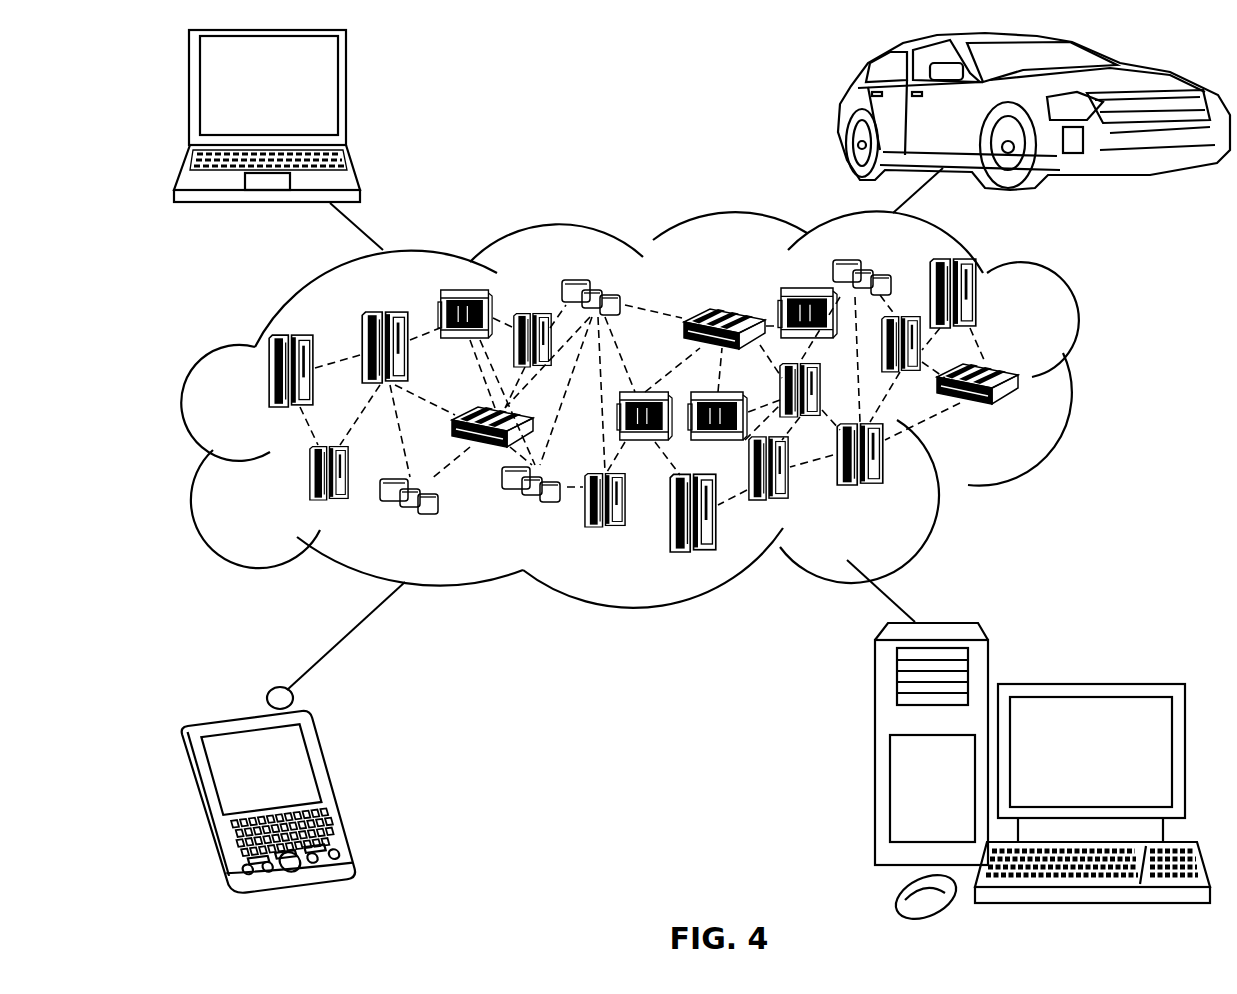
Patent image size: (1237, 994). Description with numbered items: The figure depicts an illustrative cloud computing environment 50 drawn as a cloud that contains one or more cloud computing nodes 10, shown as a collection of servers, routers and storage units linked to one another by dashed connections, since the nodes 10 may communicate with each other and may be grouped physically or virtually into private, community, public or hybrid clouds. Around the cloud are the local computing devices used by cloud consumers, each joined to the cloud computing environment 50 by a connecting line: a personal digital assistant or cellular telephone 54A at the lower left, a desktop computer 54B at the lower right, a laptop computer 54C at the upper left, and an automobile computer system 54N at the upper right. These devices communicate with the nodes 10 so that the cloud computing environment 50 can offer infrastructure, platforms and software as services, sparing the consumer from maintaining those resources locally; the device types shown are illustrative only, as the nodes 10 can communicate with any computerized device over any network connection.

The cloud computing environment 50 is at (1092, 380).
The cloud computing node 10 is at (1022, 411).
The personal digital assistant or cellular telephone 54A is at (333, 781).
The desktop computer 54B is at (1088, 684).
The laptop computer 54C is at (346, 93).
The automobile computer system 54N is at (840, 108).